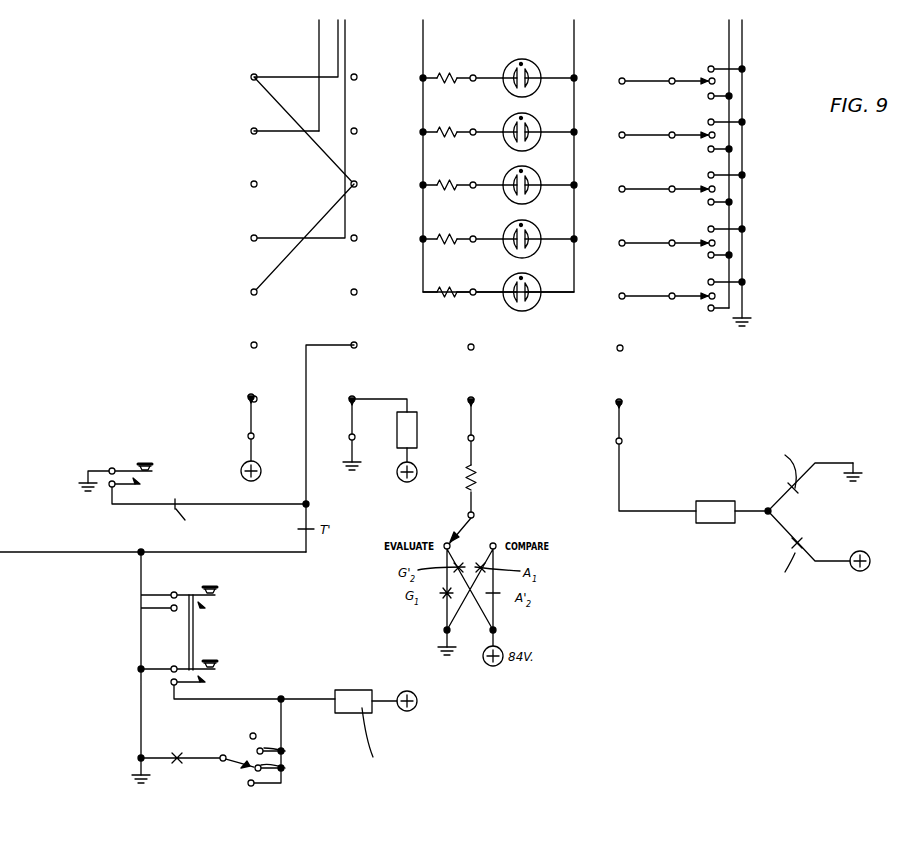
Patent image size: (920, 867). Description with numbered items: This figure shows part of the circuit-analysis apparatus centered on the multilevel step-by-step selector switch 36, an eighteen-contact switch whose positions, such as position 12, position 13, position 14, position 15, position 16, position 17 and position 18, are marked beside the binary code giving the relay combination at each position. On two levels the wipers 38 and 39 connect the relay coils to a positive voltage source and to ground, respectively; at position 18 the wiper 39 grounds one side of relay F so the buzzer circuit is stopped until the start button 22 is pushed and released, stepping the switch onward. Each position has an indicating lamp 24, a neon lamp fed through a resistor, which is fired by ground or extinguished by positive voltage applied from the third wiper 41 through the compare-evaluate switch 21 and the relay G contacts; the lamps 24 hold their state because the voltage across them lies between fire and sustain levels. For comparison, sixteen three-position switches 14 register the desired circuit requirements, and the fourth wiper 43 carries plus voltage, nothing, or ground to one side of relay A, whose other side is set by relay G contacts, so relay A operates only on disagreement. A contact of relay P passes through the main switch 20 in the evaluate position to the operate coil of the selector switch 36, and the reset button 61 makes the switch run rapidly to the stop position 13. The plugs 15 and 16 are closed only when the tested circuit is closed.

The counter stage line 12 is at (198, 102).
The stop position 13 is at (198, 131).
The three-position switch 14 is at (670, 299).
The plug 15 is at (198, 238).
The plug 16 is at (198, 291).
The line 17 is at (331, 444).
The position 18 is at (148, 398).
The main switch 20 is at (234, 766).
The compare-evaluate switch 21 is at (464, 527).
The start button 22 is at (212, 632).
The indicating lamp 24 is at (511, 121).
The selector switch 36 is at (352, 690).
The wiper 38 is at (247, 422).
The wiper 39 is at (348, 423).
The third wiper 41 is at (474, 423).
The fourth wiper 43 is at (623, 424).
The reset button 61 is at (135, 466).